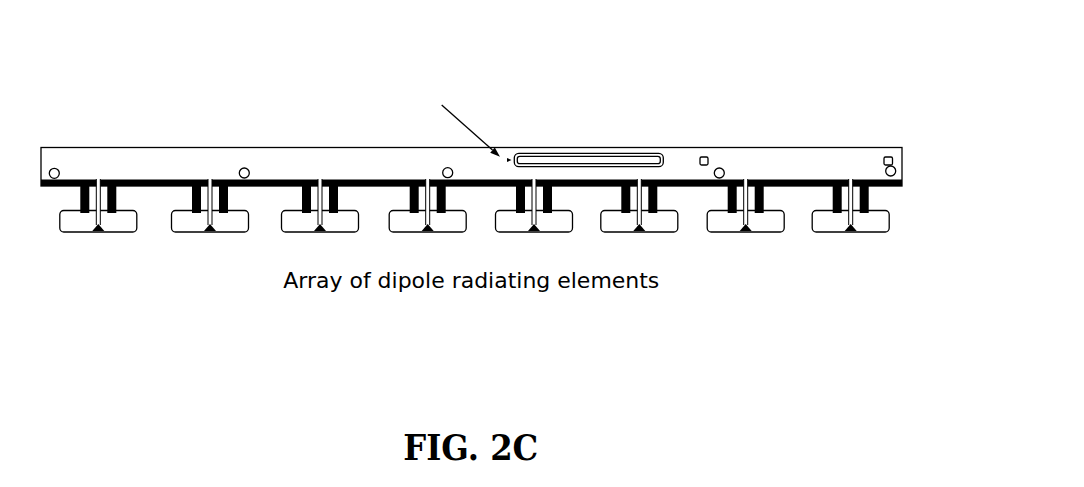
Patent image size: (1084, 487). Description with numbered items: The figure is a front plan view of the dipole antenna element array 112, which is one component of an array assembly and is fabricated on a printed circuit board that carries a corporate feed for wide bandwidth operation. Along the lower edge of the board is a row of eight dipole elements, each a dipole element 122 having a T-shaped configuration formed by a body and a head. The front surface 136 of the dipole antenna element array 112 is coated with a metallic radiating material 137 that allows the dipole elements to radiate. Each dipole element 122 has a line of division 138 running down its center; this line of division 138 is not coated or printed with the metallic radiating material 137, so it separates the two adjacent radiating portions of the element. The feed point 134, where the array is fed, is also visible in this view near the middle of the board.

The dipole antenna element array 112 is at (503, 152).
The dipole element 122 is at (762, 226).
The feed point 134 is at (530, 141).
The front surface 136 is at (854, 161).
The metallic radiating material 137 is at (681, 163).
The line of division 138 is at (743, 212).